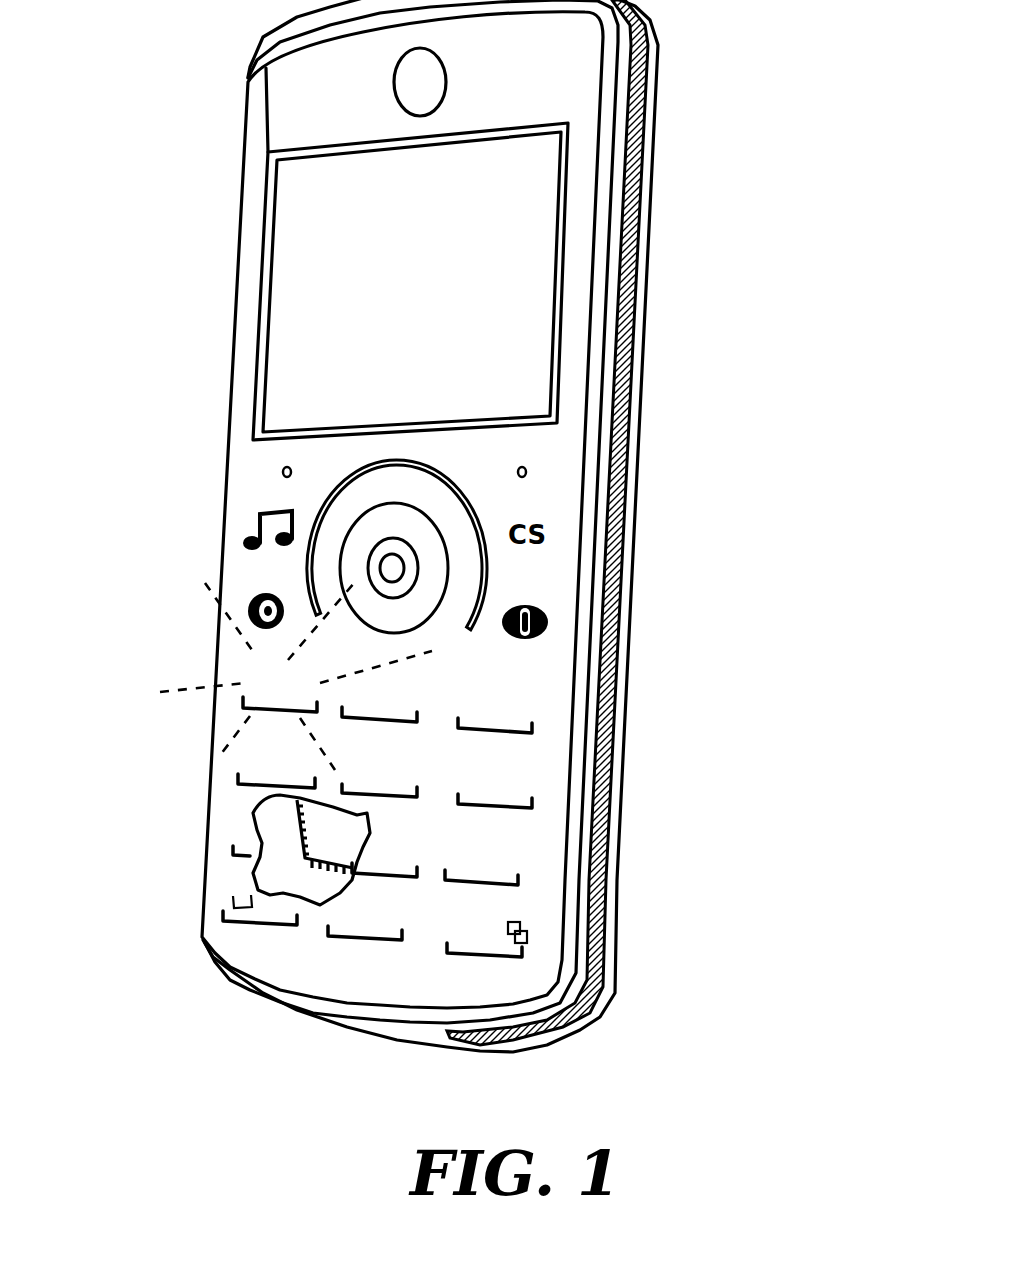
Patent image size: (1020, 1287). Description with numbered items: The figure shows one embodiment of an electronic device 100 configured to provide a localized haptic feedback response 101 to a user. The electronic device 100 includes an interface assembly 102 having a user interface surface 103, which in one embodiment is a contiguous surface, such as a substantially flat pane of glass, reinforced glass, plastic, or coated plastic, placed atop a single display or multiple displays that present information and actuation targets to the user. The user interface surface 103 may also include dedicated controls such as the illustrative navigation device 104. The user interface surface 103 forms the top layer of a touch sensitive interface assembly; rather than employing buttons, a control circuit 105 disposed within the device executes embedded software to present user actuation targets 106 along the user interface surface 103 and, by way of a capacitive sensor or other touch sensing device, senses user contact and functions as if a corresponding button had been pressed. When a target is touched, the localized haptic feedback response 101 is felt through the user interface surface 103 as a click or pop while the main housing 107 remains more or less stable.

The electronic device 100 is at (182, 550).
The localized haptic feedback response 101 is at (192, 688).
The interface assembly 102 is at (348, 968).
The user interface surface 103 is at (566, 898).
The navigation device 104 is at (373, 503).
The control circuit 105 is at (323, 823).
The user actuation targets 106 is at (539, 848).
The main housing 107 is at (643, 450).